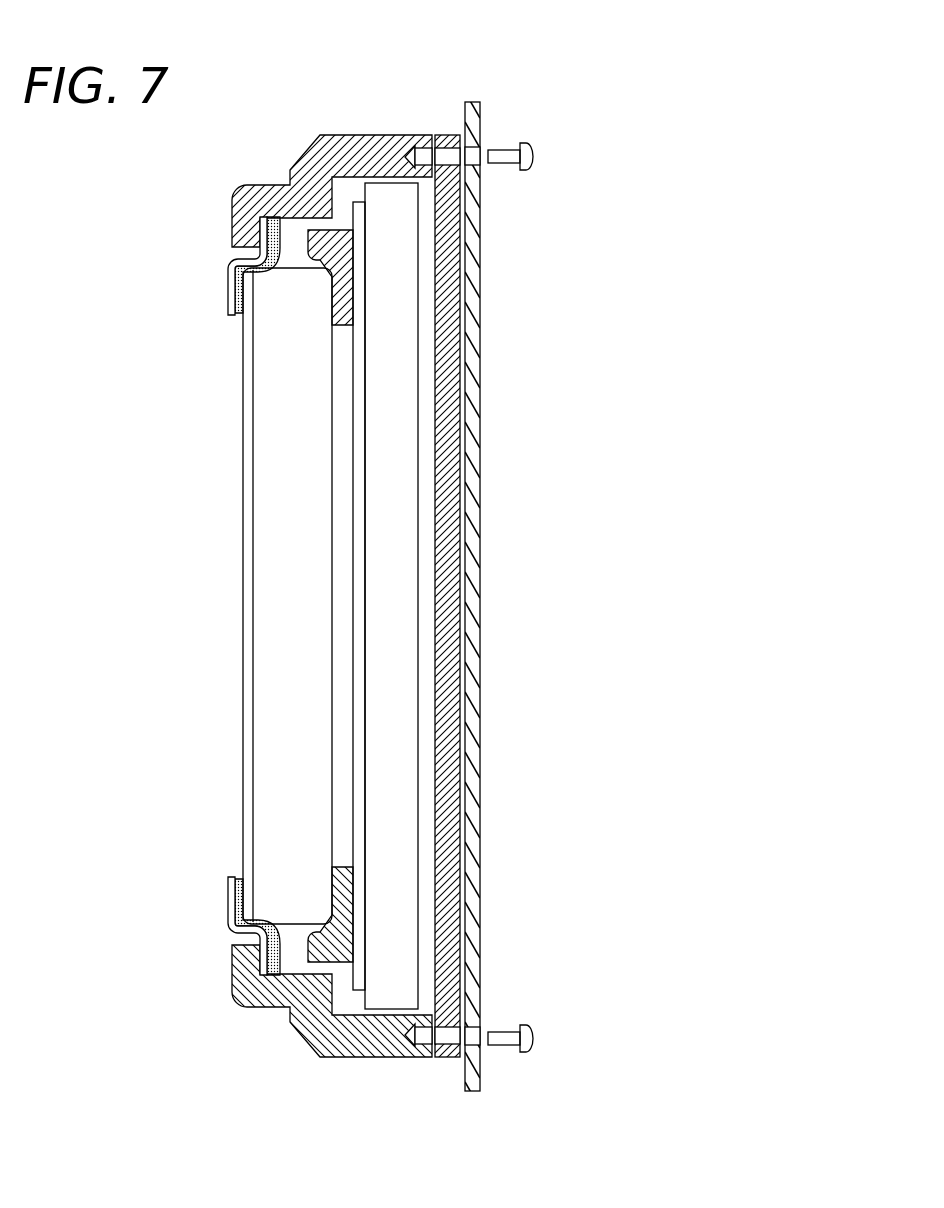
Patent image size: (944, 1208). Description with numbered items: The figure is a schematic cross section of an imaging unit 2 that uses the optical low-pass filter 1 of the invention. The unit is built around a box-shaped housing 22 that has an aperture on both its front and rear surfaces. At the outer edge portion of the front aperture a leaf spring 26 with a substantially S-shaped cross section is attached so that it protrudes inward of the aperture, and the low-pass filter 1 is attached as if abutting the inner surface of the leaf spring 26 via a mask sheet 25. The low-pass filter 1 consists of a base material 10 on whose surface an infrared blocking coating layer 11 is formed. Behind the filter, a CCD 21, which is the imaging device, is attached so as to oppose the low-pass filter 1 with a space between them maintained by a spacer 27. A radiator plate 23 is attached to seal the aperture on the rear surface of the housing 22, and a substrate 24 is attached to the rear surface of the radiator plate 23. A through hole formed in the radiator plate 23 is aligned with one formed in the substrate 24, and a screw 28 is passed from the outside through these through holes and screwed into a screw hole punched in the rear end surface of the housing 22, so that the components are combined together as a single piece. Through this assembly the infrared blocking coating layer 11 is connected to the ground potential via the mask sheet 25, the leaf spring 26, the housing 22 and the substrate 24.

The optical low-pass filter 1 is at (140, 498).
The imaging unit 2 is at (492, 57).
The base material 10 is at (290, 513).
The infrared blocking coating layer 11 is at (243, 582).
The CCD 21 is at (390, 738).
The housing 22 is at (340, 135).
The radiator plate 23 is at (437, 678).
The substrate 24 is at (480, 572).
The mask sheet 25 is at (228, 290).
The leaf spring 26 is at (232, 262).
The spacer 27 is at (332, 295).
The screw 28 is at (535, 157).